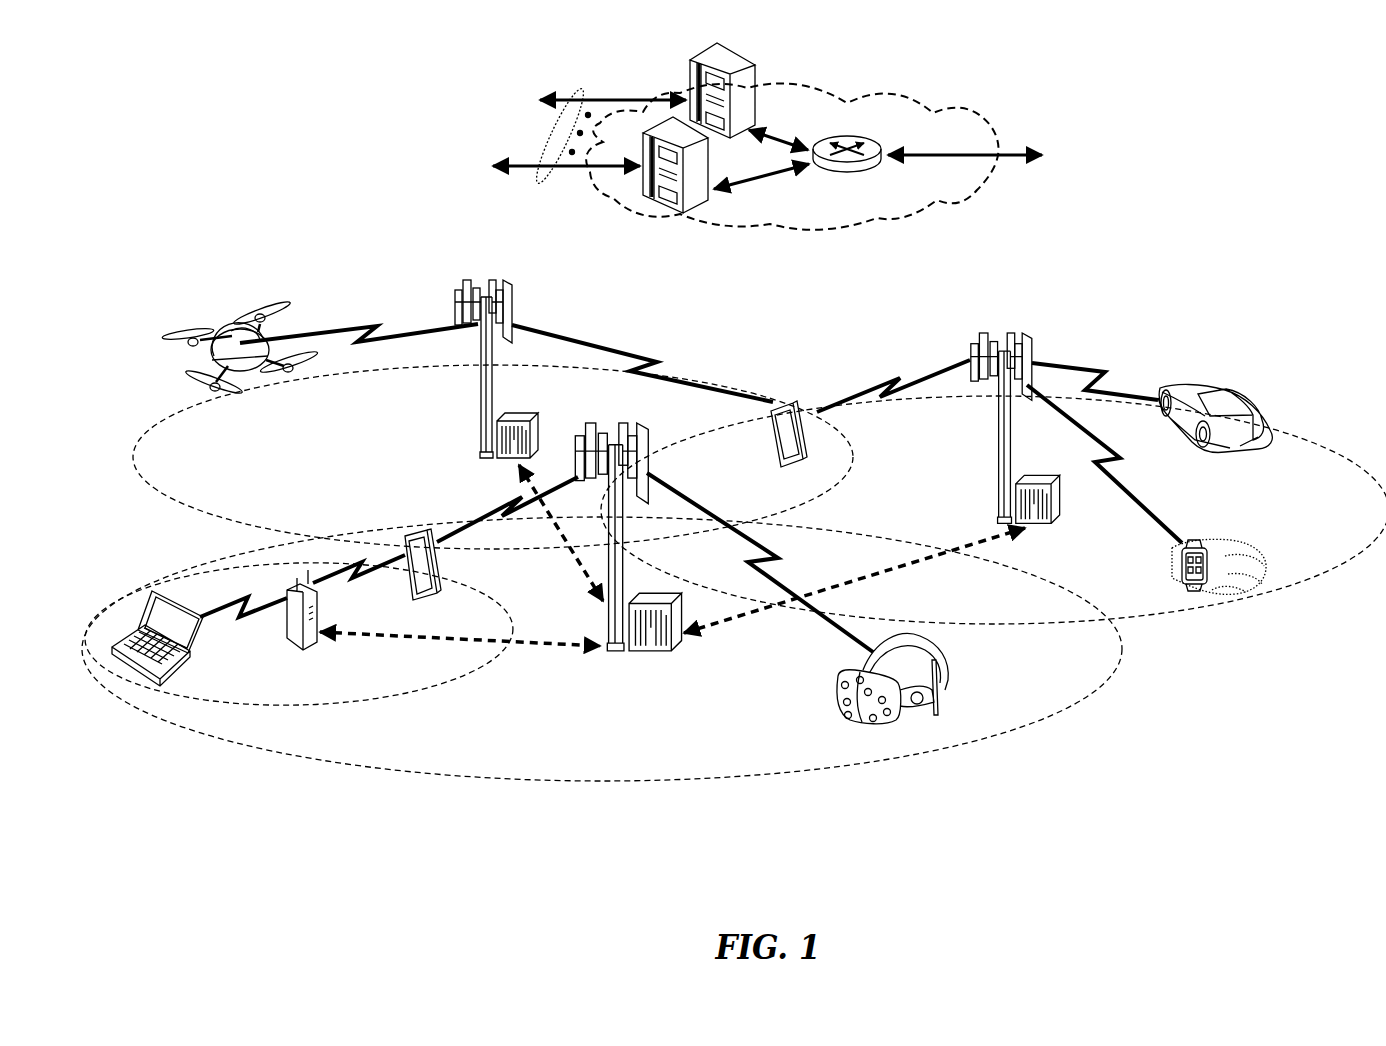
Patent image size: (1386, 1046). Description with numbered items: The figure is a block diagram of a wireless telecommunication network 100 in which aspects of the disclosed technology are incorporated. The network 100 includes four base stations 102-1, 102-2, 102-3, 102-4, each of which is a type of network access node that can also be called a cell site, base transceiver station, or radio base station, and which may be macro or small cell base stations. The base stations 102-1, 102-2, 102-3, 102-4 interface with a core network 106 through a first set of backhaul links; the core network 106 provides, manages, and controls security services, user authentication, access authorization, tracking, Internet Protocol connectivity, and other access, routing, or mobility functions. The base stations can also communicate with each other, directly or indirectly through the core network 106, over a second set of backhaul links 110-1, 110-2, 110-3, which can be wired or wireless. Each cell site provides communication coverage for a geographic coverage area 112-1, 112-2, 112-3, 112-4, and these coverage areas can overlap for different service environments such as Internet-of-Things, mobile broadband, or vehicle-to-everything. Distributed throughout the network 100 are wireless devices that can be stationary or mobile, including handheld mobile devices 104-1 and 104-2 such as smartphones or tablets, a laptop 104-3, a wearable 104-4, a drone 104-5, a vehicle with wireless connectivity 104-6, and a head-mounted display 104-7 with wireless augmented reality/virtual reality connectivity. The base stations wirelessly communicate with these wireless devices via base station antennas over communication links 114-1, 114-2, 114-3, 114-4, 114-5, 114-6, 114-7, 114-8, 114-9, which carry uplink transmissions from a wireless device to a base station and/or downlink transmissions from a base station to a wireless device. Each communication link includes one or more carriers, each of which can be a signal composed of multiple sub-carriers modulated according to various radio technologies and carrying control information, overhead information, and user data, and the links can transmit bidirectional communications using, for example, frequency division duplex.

The wireless telecommunication network 100 is at (1288, 143).
The core network 106 is at (878, 222).
The base station 102-1 is at (605, 660).
The base station 102-2 is at (478, 413).
The base station 102-3 is at (996, 445).
The base station 102-4 is at (292, 645).
The handheld mobile device 104-1 is at (441, 583).
The handheld mobile device 104-2 is at (767, 440).
The laptop 104-3 is at (140, 680).
The wearable 104-4 is at (1198, 546).
The drone 104-5 is at (258, 380).
The vehicle with wireless connectivity 104-6 is at (1242, 395).
The head-mounted display 104-7 is at (958, 680).
The backhaul link 110-1 is at (360, 640).
The backhaul link 110-2 is at (922, 573).
The backhaul link 110-3 is at (575, 578).
The geographic coverage area 112-1 is at (535, 778).
The geographic coverage area 112-2 is at (420, 690).
The geographic coverage area 112-3 is at (190, 524).
The geographic coverage area 112-4 is at (1292, 440).
The communication link 114-1 is at (786, 567).
The communication link 114-2 is at (505, 508).
The communication link 114-3 is at (218, 618).
The communication link 114-4 is at (372, 582).
The communication link 114-5 is at (372, 326).
The communication link 114-6 is at (647, 370).
The communication link 114-7 is at (892, 388).
The communication link 114-8 is at (1125, 482).
The communication link 114-9 is at (1090, 380).